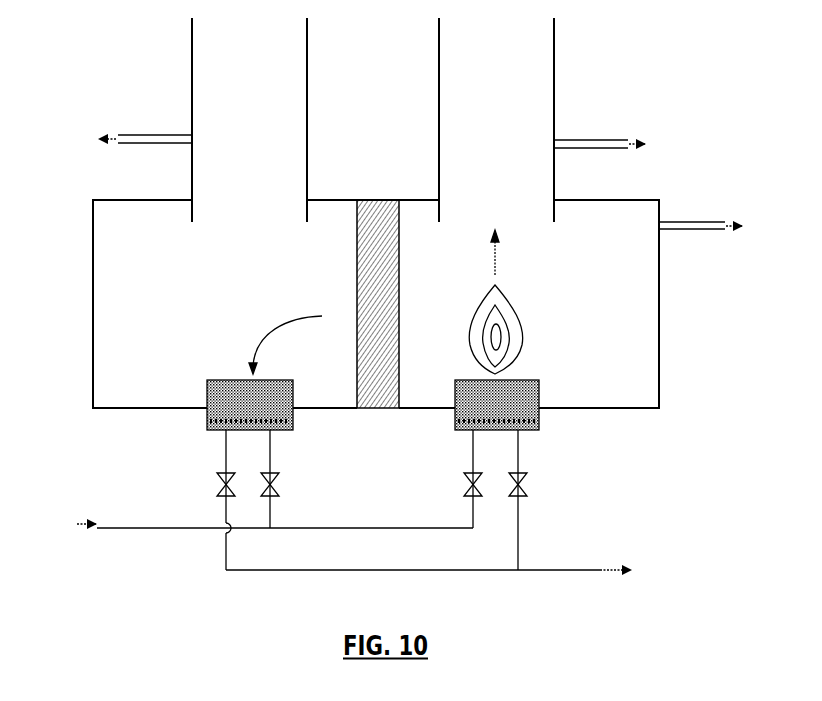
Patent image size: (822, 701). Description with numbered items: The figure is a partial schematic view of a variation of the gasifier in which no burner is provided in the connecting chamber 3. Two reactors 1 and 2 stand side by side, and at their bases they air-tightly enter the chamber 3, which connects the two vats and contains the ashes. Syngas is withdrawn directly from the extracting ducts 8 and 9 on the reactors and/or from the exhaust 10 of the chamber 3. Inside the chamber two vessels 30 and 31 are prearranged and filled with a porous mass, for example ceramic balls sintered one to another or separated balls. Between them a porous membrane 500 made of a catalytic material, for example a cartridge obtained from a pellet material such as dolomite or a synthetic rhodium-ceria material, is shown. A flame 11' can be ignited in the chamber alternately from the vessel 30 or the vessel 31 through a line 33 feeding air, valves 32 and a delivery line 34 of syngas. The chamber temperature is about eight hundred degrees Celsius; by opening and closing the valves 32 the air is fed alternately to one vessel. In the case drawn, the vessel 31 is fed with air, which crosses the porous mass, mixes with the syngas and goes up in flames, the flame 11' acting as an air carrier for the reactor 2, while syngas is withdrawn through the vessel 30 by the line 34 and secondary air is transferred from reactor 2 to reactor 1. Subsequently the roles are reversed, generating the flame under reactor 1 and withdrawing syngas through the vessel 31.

The reactor 1 is at (307, 67).
The reactor 2 is at (439, 118).
The connecting chamber 3 is at (659, 316).
The extracting duct 8 is at (600, 132).
The extracting duct 9 is at (145, 128).
The exhaust 10 is at (715, 225).
The flame 11' is at (527, 302).
The vessel 30 is at (207, 418).
The vessel 31 is at (539, 417).
The valves 32 is at (279, 490).
The air feeding line 33 is at (170, 530).
The syngas delivery line 34 is at (292, 573).
The porous membrane 500 is at (372, 232).